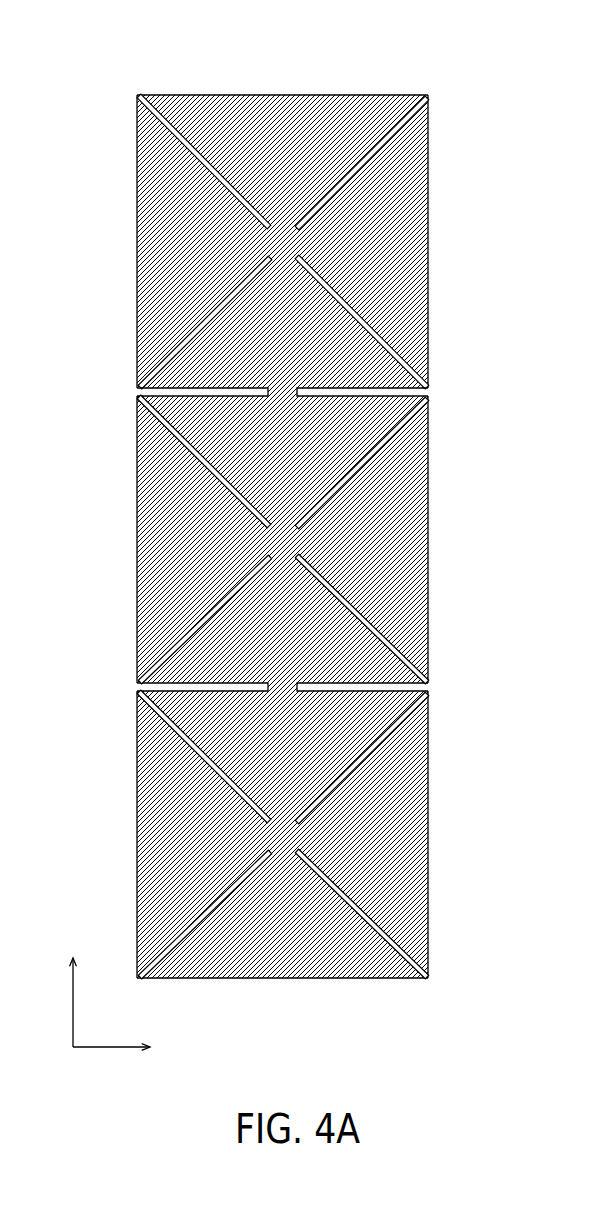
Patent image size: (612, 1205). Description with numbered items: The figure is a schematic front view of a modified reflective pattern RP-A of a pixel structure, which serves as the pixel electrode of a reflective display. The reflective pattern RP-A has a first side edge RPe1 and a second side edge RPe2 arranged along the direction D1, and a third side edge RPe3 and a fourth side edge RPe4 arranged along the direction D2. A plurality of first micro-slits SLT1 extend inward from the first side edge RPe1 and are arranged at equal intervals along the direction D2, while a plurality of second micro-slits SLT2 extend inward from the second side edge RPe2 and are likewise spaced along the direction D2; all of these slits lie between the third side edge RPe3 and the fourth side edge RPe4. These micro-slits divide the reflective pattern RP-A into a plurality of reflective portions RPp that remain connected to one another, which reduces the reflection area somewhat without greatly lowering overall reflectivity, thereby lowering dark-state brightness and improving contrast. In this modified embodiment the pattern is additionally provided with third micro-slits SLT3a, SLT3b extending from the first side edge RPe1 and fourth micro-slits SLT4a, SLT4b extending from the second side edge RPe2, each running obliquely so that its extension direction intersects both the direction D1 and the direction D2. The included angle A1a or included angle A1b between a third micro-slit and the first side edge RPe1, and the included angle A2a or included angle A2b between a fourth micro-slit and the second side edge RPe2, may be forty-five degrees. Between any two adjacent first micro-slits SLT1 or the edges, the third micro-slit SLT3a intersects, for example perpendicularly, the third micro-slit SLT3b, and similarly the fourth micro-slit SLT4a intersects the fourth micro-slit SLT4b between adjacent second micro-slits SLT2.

The reflective pattern RP-A is at (168, 600).
The first side edge RPe1 is at (135, 121).
The second side edge RPe2 is at (438, 120).
The third side edge RPe3 is at (207, 92).
The fourth side edge RPe4 is at (350, 980).
The first micro-slit SLT1 is at (192, 392).
The second micro-slit SLT2 is at (372, 392).
The third micro-slit SLT3a is at (242, 200).
The third micro-slit SLT3b is at (247, 283).
The fourth micro-slit SLT4a is at (327, 193).
The fourth micro-slit SLT4b is at (327, 285).
The included angle A1a is at (192, 157).
The included angle A1b is at (193, 327).
The included angle A2a is at (373, 153).
The included angle A2b is at (378, 319).
The reflective portion RPp is at (327, 447).
The direction D1 is at (130, 1052).
The direction D2 is at (73, 988).